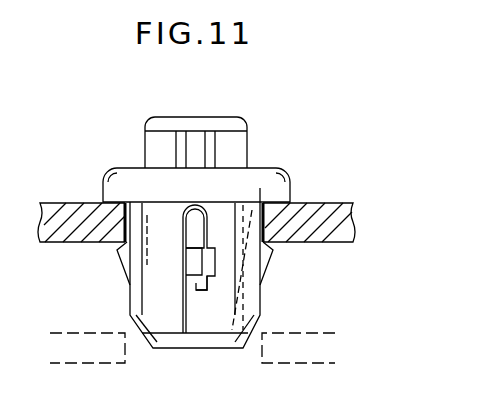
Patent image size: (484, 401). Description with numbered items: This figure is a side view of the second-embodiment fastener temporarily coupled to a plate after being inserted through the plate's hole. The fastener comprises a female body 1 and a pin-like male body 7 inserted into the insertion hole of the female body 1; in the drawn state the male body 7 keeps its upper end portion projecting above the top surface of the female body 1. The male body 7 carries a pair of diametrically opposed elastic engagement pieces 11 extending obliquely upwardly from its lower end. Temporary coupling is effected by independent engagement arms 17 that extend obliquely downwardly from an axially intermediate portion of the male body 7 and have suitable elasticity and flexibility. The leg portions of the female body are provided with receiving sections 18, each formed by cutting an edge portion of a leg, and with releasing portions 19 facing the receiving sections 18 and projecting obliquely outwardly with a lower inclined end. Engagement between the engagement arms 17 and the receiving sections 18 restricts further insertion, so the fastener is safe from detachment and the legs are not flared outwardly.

The female body 1 is at (100, 172).
The male body 7 is at (209, 109).
The elastic engagement pieces 11 is at (125, 241).
The engagement arms 17 is at (193, 240).
The receiving sections 18 is at (200, 290).
The releasing portions 19 is at (193, 255).